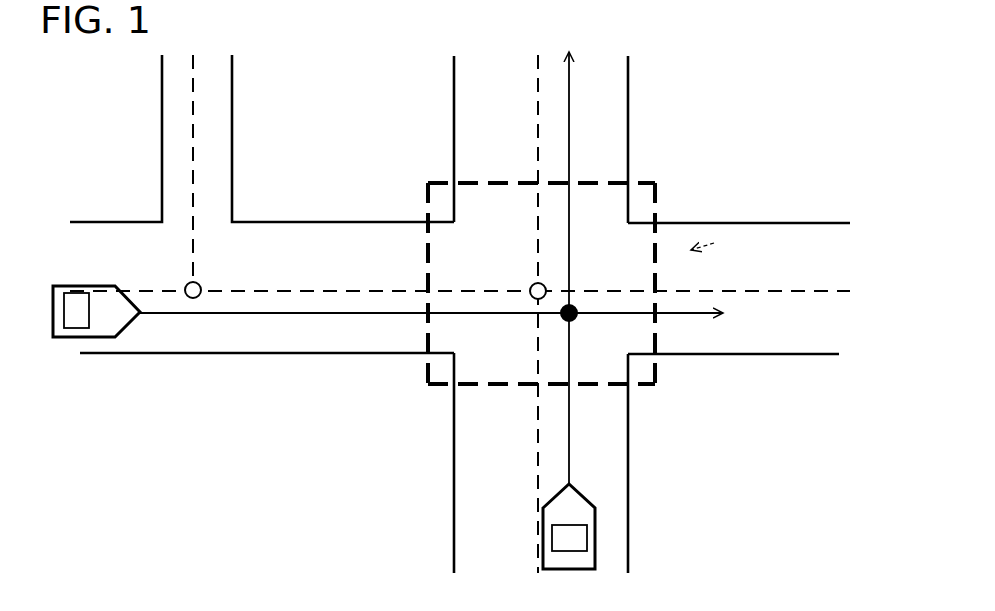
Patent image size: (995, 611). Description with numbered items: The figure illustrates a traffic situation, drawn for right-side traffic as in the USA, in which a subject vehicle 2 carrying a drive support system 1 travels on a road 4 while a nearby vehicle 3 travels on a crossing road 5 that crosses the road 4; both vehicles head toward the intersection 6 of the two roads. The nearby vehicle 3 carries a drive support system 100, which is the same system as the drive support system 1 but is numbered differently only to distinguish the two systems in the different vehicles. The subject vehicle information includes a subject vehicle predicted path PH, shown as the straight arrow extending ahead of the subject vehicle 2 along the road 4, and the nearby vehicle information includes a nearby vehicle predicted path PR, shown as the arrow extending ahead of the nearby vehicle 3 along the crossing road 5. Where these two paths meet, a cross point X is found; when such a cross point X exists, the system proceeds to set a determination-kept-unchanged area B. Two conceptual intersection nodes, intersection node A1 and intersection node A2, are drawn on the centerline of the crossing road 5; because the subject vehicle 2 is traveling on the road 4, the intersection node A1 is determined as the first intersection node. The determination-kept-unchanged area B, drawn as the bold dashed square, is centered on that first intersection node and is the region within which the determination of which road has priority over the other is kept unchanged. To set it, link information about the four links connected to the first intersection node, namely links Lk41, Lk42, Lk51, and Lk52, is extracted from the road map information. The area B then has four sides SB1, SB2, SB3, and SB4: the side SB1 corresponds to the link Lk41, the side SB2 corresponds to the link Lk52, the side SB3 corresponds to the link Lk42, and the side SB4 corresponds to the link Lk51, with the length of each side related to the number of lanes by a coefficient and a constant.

The drive support system 1 is at (575, 525).
The subject vehicle 2 is at (597, 274).
The nearby vehicle 3 is at (426, 279).
The road 4 is at (630, 425).
The crossing road 5 is at (325, 222).
The intersection 6 is at (544, 288).
The drive support system 100 is at (72, 290).
The intersection node A1 is at (524, 280).
The intersection node A2 is at (209, 277).
The cross point X is at (580, 327).
The determination-kept-unchanged area B is at (711, 243).
The subject vehicle predicted path PH is at (571, 148).
The nearby vehicle predicted path PR is at (395, 312).
The link Lk41 is at (536, 488).
The link Lk42 is at (536, 96).
The link Lk51 is at (460, 287).
The link Lk52 is at (792, 288).
The side SB1 is at (484, 387).
The side SB2 is at (656, 281).
The side SB3 is at (499, 181).
The side SB4 is at (427, 327).